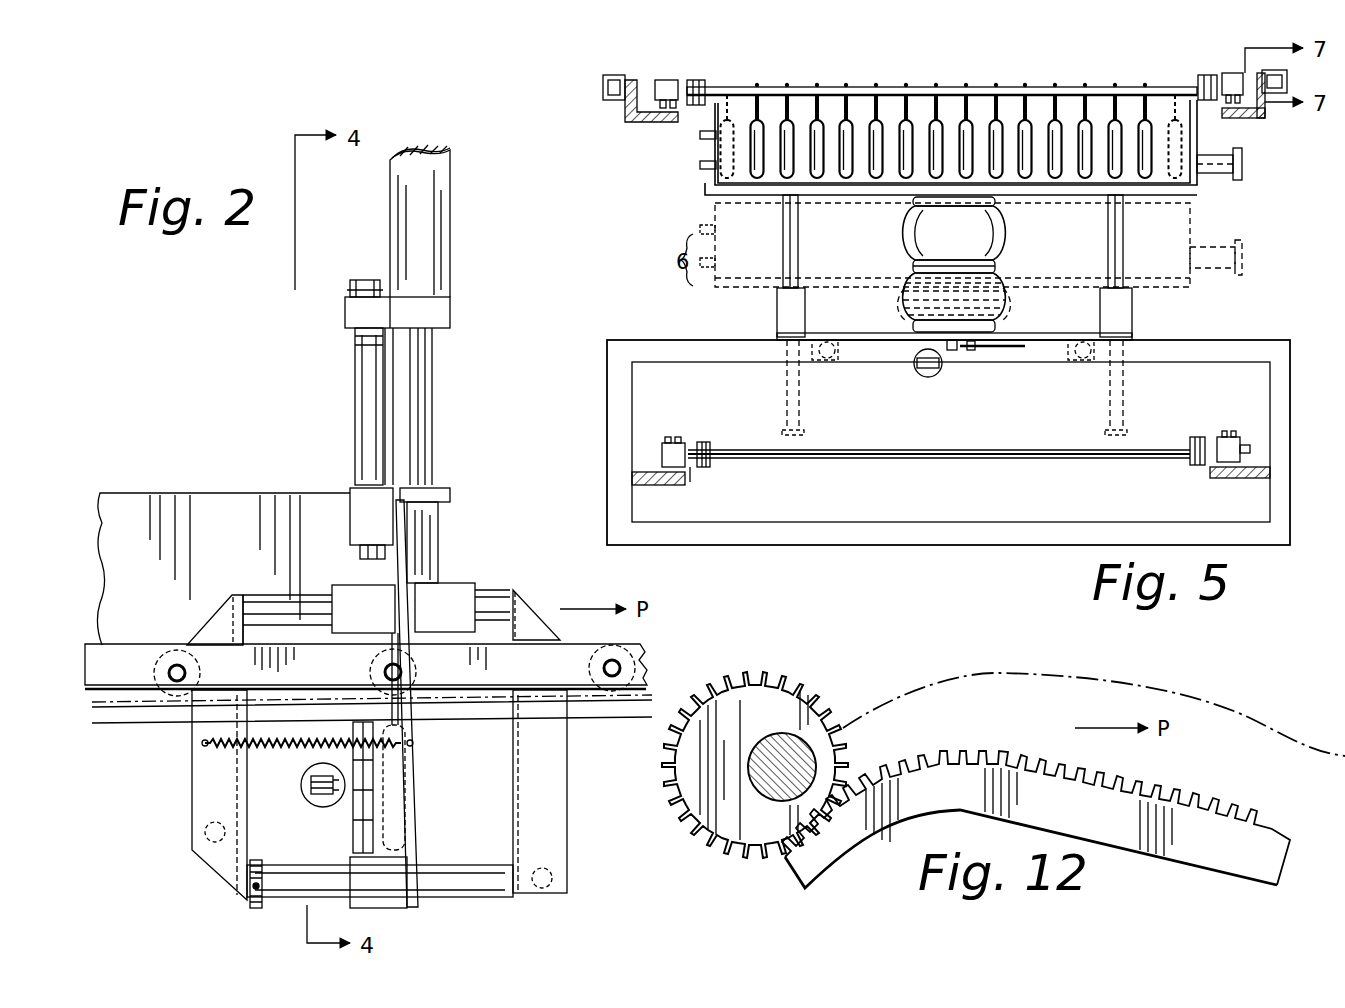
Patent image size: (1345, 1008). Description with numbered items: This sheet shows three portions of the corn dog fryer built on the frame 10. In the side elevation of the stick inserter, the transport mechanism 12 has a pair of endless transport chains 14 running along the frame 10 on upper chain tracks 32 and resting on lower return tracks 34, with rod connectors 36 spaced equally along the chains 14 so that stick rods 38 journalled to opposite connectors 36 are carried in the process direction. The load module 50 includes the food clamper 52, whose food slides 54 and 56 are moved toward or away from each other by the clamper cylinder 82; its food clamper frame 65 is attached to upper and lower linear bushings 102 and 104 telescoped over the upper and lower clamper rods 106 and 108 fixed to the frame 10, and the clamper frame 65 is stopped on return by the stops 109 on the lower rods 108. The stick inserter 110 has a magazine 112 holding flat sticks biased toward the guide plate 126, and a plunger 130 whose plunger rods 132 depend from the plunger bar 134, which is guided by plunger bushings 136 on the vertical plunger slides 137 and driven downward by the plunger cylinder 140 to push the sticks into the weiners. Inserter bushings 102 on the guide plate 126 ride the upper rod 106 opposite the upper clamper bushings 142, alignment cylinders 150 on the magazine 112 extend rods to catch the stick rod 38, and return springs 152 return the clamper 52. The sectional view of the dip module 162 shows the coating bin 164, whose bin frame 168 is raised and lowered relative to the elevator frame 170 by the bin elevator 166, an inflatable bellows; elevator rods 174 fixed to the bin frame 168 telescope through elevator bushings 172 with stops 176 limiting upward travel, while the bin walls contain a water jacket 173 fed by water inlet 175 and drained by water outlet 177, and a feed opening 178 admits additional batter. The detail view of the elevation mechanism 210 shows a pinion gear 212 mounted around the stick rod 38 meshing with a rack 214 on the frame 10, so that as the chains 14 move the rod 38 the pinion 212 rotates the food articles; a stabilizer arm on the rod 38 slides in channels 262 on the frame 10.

In FIG. 2, the frame 10 is at (642, 644).
In FIG. 5, the frame 10 is at (603, 90).
In FIG. 5, the transport mechanism 12 is at (1230, 64).
In FIG. 5, the transport chains 14 is at (642, 122).
In FIG. 5, the upper chain tracks 32 is at (654, 122).
In FIG. 5, the lower return tracks 34 is at (690, 482).
In FIG. 2, the rod connectors 36 is at (588, 666).
In FIG. 5, the rod connectors 36 is at (668, 80).
In FIG. 5, the stick rods 38 is at (852, 86).
In FIG. 12, the stick rods 38 is at (778, 800).
In FIG. 2, the load module 50 is at (280, 412).
In FIG. 2, the food clamper 52 is at (318, 815).
In FIG. 2, the food slide 54 is at (351, 735).
In FIG. 2, the food slide 56 is at (352, 838).
In FIG. 2, the food clamper frame 65 is at (442, 906).
In FIG. 2, the clamper cylinder 82 is at (301, 788).
In FIG. 2, the upper linear bushing 102 is at (370, 623).
In FIG. 2, the lower linear bushing 104 is at (387, 893).
In FIG. 2, the upper clamper rod 106 is at (287, 586).
In FIG. 2, the lower clamper rod 108 is at (458, 865).
In FIG. 2, the stops 109 is at (247, 908).
In FIG. 2, the stick inserter 110 is at (206, 473).
In FIG. 2, the magazine 112 is at (142, 587).
In FIG. 2, the guide plate 126 is at (393, 567).
In FIG. 2, the plunger 130 is at (343, 352).
In FIG. 2, the plunger rods 132 is at (385, 430).
In FIG. 2, the plunger bar 134 is at (345, 313).
In FIG. 2, the plunger bushings 136 is at (350, 294).
In FIG. 2, the plunger slides 137 is at (355, 390).
In FIG. 2, the plunger cylinder 140 is at (451, 212).
In FIG. 2, the upper clamper bushings 142 is at (450, 583).
In FIG. 2, the alignment cylinders 150 is at (440, 520).
In FIG. 2, the return springs 152 is at (302, 745).
In FIG. 5, the dip module 162 is at (688, 248).
In FIG. 5, the coating bin 164 is at (1050, 180).
In FIG. 5, the bin elevator 166 is at (949, 247).
In FIG. 5, the bin frame 168 is at (852, 196).
In FIG. 5, the elevator frame 170 is at (875, 340).
In FIG. 5, the elevator bushings 172 is at (778, 318).
In FIG. 5, the water jacket 173 is at (727, 252).
In FIG. 5, the elevator rods 174 is at (800, 242).
In FIG. 5, the water inlet 175 is at (713, 218).
In FIG. 5, the stops 176 is at (1127, 429).
In FIG. 5, the water outlet 177 is at (710, 278).
In FIG. 5, the feed opening 178 is at (1222, 180).
In FIG. 12, the elevation mechanism 210 is at (1036, 819).
In FIG. 2, the pinion gears 212 is at (646, 690).
In FIG. 5, the pinion gears 212 is at (704, 79).
In FIG. 12, the pinion gears 212 is at (794, 684).
In FIG. 12, the racks 214 is at (945, 797).
In FIG. 5, the channels 262 is at (1284, 72).